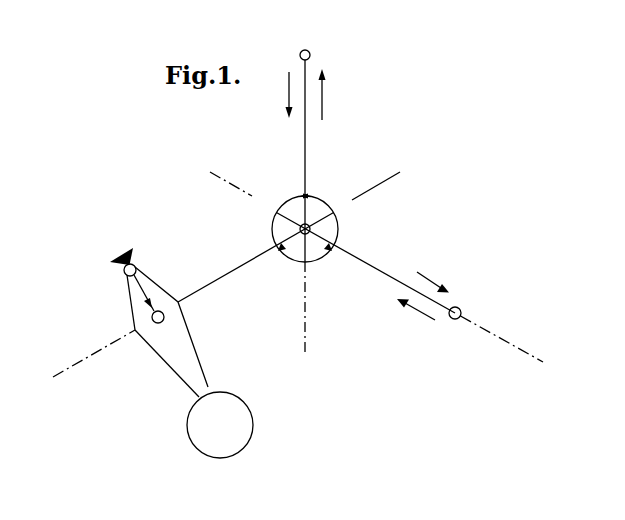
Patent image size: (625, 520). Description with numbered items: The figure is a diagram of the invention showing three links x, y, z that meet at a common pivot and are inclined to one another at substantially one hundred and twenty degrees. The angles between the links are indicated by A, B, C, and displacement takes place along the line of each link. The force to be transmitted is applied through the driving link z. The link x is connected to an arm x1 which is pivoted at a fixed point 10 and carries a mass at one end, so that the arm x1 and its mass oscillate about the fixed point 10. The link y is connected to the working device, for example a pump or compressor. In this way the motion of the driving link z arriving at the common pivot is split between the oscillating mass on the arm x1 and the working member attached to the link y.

The fixed point 10 is at (172, 353).
The angle between the links A is at (368, 196).
The angle between the links B is at (241, 196).
The angle between the links C is at (307, 307).
The link x is at (91, 367).
The arm x1 is at (174, 352).
The link y is at (478, 322).
The driving link z is at (306, 143).